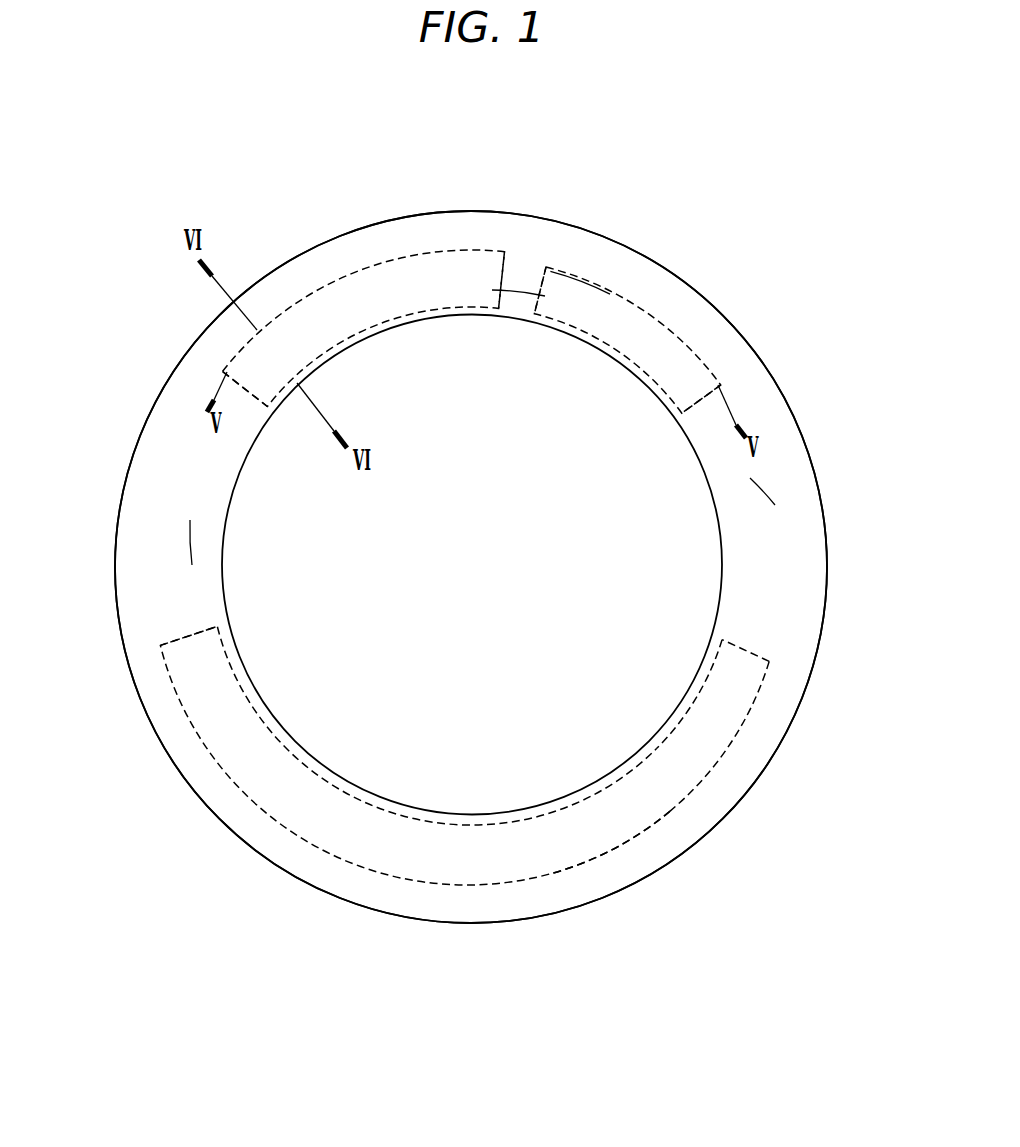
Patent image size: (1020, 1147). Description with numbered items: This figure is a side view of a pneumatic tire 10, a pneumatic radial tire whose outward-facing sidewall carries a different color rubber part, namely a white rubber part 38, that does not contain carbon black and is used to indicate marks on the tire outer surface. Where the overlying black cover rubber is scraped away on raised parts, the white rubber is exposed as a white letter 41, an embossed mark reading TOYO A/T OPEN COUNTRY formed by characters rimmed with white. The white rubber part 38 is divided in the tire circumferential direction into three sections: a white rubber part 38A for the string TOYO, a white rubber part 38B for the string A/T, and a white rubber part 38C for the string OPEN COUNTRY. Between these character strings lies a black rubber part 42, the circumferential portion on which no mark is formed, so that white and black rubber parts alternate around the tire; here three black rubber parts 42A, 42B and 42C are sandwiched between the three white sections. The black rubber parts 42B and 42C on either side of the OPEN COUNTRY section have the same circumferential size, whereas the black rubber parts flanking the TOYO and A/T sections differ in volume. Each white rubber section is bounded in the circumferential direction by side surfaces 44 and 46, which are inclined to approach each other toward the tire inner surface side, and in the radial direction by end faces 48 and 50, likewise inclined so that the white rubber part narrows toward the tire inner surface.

The pneumatic tire 10 is at (505, 171).
The white rubber part 38 is at (703, 780).
The white rubber part 38A is at (373, 262).
The white rubber part 38B is at (617, 283).
The white rubber part 38C is at (240, 792).
The white letter 41 is at (355, 330).
The black rubber part 42 is at (165, 566).
The black rubber part 42A is at (520, 303).
The black rubber part 42B is at (765, 490).
The black rubber part 42C is at (192, 542).
The side surface 44 is at (242, 386).
The side surface 46 is at (518, 270).
The end face 48 is at (580, 870).
The end face 50 is at (612, 790).